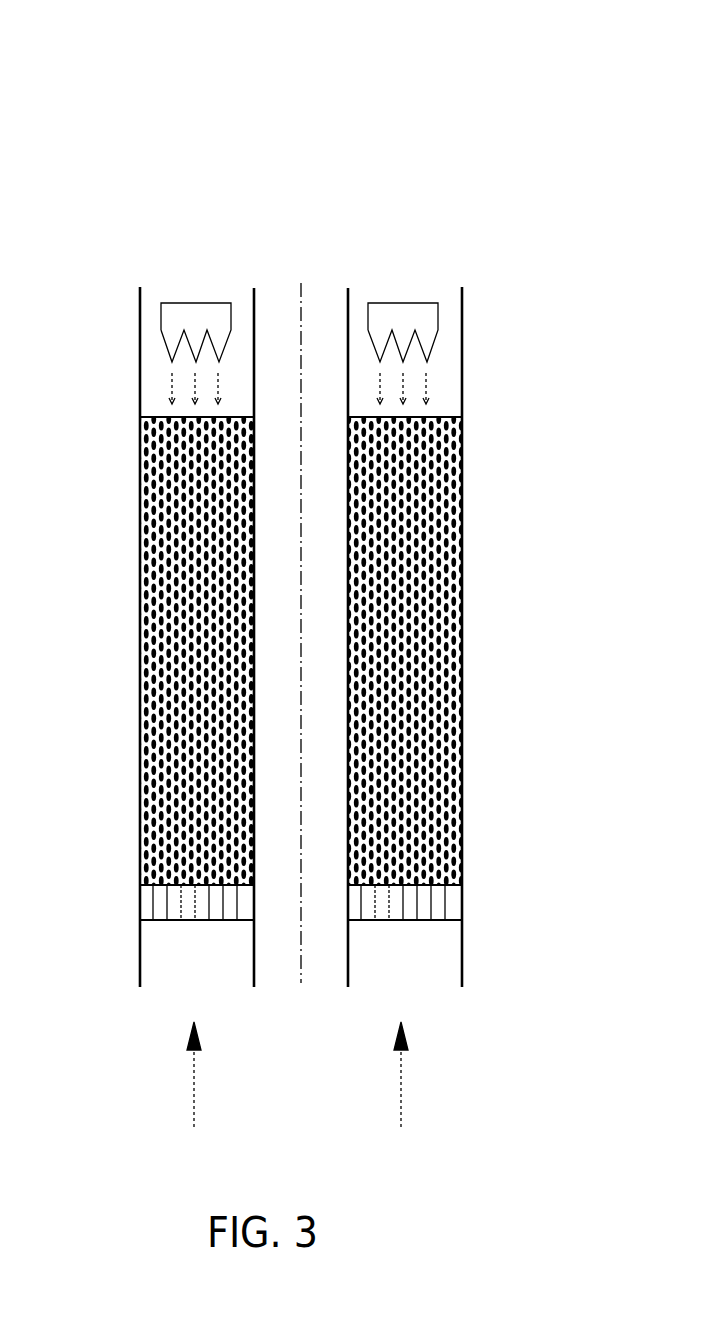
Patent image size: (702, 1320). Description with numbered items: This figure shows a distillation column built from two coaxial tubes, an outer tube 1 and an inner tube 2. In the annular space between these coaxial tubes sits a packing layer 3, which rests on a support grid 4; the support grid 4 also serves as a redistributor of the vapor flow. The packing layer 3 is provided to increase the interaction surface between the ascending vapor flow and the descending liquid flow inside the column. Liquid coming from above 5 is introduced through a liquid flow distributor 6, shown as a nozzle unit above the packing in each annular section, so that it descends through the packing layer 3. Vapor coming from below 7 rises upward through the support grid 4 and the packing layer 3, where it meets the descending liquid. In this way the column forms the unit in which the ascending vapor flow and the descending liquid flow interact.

The outer tube 1 is at (142, 305).
The inner tube 2 is at (255, 323).
The packing layer 3 is at (458, 477).
The support grid 4 is at (185, 922).
The liquid coming from above 5 is at (172, 383).
The liquid flow distributor 6 is at (208, 303).
The vapor coming from below 7 is at (207, 1087).